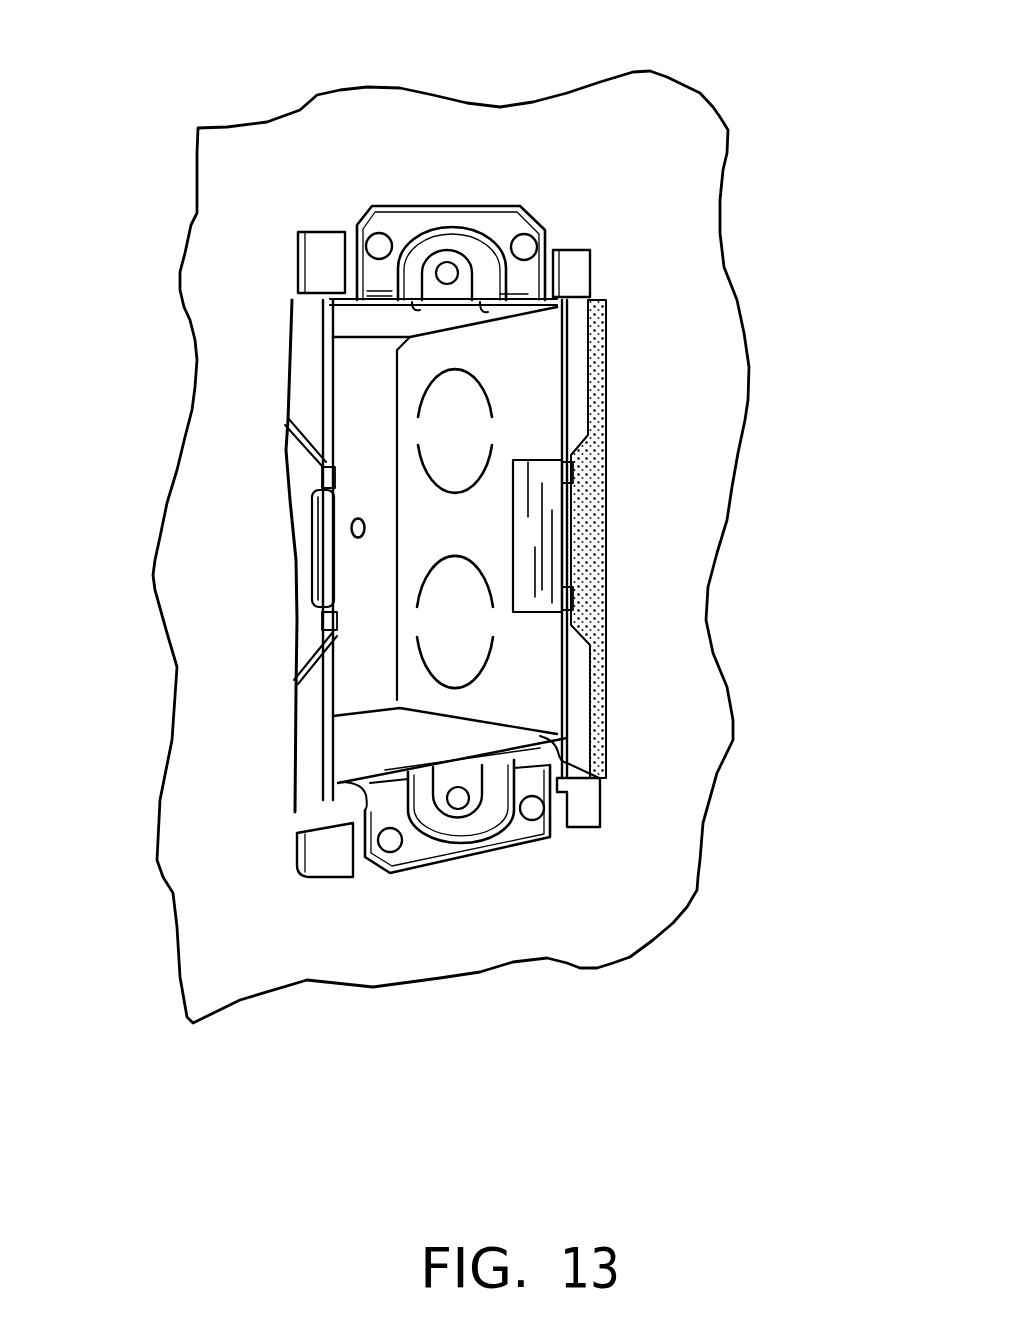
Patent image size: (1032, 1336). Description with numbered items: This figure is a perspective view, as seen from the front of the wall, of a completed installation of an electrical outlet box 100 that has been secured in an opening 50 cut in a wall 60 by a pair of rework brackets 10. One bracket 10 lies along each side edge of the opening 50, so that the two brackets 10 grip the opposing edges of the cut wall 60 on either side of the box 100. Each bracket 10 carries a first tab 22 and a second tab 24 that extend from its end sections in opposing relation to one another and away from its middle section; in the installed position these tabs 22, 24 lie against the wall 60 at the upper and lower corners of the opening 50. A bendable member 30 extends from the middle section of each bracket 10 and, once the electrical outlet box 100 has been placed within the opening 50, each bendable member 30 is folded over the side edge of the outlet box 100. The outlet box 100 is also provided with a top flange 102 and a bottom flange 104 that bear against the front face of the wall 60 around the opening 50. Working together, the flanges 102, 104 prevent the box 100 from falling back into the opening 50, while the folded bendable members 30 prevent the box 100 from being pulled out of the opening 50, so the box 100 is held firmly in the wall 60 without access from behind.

The bracket 10 is at (607, 320).
The first tab 22 is at (299, 232).
The second tab 24 is at (585, 248).
The bendable member 30 is at (558, 520).
The opening 50 is at (563, 492).
The wall 60 is at (438, 161).
The electrical outlet box 100 is at (495, 398).
The top flange 102 is at (515, 207).
The bottom flange 104 is at (545, 826).